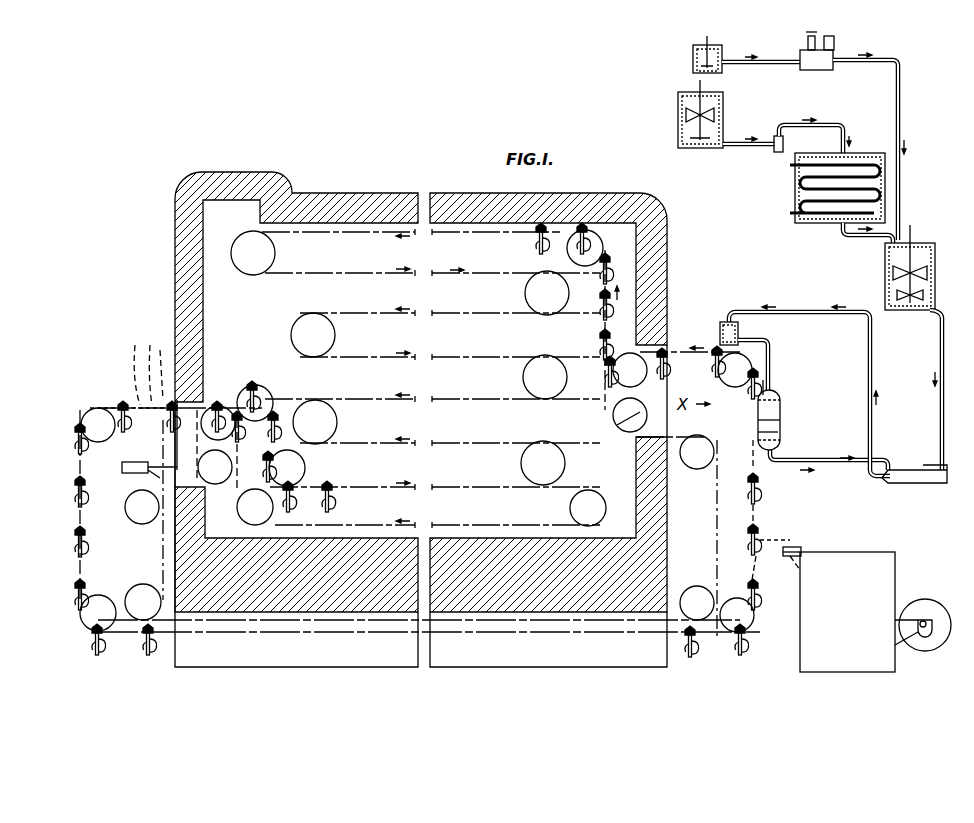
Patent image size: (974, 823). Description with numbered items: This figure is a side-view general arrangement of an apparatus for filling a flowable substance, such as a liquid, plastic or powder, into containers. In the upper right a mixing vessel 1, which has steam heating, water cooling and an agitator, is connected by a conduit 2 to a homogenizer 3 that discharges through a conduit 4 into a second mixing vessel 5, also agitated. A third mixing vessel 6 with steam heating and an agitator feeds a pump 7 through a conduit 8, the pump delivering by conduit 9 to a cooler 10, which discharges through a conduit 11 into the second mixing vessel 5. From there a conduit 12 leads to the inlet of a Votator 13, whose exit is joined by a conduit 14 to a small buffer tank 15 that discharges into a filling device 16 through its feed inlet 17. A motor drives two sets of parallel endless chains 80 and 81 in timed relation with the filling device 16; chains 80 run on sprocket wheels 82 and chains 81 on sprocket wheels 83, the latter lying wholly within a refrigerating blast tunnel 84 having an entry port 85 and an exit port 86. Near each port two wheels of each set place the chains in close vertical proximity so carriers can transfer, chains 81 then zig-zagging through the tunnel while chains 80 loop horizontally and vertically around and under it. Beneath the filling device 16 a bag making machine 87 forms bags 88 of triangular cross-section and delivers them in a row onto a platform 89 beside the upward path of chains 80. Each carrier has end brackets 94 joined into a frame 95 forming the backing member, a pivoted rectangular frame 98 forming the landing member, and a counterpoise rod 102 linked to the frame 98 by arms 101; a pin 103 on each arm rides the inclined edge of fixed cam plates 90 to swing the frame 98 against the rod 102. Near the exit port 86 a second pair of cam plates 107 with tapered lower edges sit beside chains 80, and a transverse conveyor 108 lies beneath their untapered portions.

The mixing vessel 1 is at (693, 62).
The conduit 2 is at (760, 65).
The homogenizer 3 is at (812, 71).
The conduit 4 is at (895, 90).
The second mixing vessel 5 is at (884, 255).
The third mixing vessel 6 is at (723, 118).
The pump 7 is at (777, 153).
The conduit 8 is at (755, 150).
The conduit 9 is at (803, 126).
The cooler 10 is at (797, 223).
The conduit 11 is at (845, 235).
The conduit 12 is at (940, 350).
The Votator 13 is at (910, 484).
The conduit 14 is at (873, 368).
The buffer tank 15 is at (740, 330).
The filling device 16 is at (782, 425).
The feed inlet 17 is at (772, 368).
The endless chains 80 is at (125, 513).
The endless chains 81 is at (392, 362).
The sprocket wheels 82 is at (127, 497).
The sprocket wheels 83 is at (295, 313).
The refrigerating blast tunnel 84 is at (457, 200).
The entry port 85 is at (617, 425).
The exit port 86 is at (200, 412).
The bag making machine 87 is at (888, 552).
The bags 88 is at (792, 538).
The platform 89 is at (802, 552).
The cam plates 90 is at (765, 578).
The end brackets 94 is at (130, 404).
The frame 95 is at (110, 405).
The rectangular frame 98 is at (120, 440).
The arms 101 is at (128, 400).
The counterpoise rod 102 is at (105, 408).
The pin 103 is at (200, 400).
The cam plates 107 is at (155, 365).
The transverse conveyor 108 is at (152, 472).